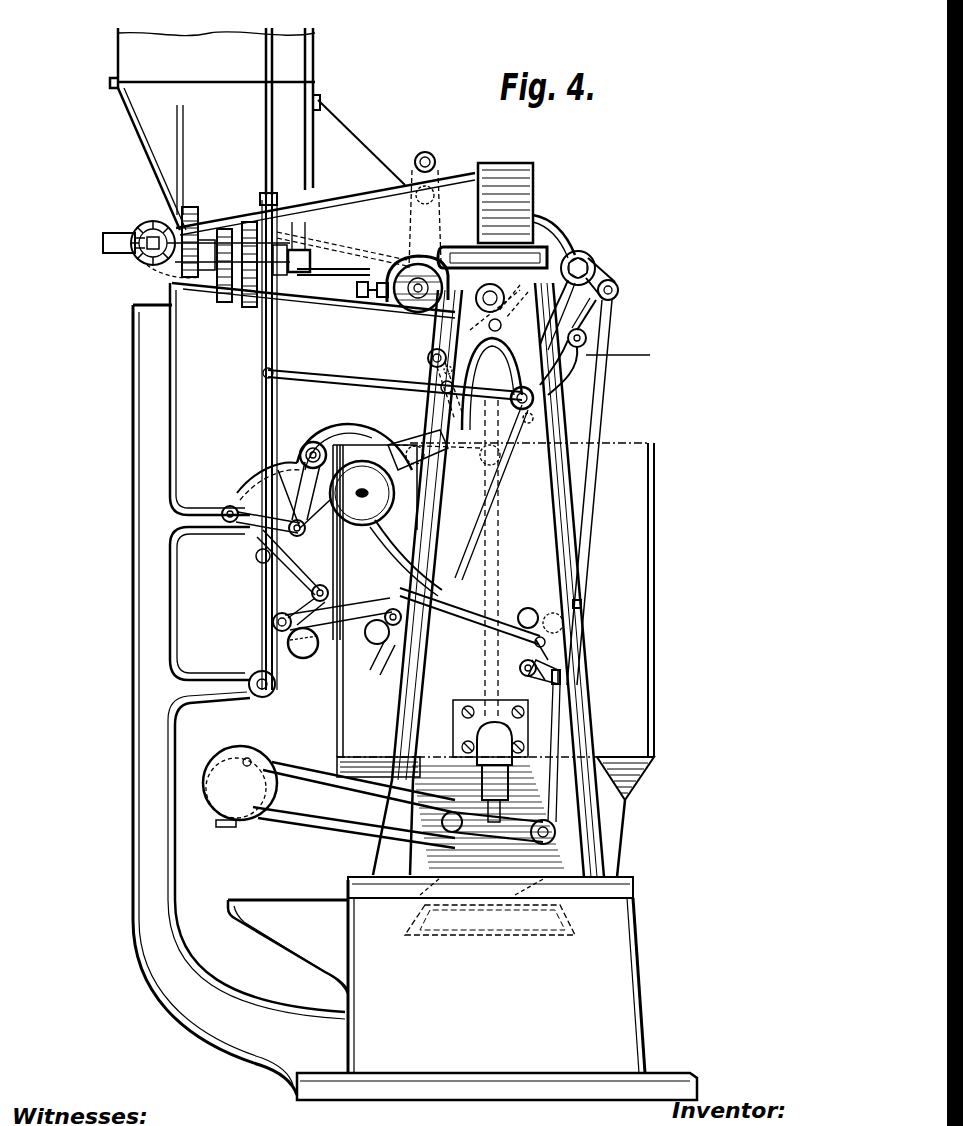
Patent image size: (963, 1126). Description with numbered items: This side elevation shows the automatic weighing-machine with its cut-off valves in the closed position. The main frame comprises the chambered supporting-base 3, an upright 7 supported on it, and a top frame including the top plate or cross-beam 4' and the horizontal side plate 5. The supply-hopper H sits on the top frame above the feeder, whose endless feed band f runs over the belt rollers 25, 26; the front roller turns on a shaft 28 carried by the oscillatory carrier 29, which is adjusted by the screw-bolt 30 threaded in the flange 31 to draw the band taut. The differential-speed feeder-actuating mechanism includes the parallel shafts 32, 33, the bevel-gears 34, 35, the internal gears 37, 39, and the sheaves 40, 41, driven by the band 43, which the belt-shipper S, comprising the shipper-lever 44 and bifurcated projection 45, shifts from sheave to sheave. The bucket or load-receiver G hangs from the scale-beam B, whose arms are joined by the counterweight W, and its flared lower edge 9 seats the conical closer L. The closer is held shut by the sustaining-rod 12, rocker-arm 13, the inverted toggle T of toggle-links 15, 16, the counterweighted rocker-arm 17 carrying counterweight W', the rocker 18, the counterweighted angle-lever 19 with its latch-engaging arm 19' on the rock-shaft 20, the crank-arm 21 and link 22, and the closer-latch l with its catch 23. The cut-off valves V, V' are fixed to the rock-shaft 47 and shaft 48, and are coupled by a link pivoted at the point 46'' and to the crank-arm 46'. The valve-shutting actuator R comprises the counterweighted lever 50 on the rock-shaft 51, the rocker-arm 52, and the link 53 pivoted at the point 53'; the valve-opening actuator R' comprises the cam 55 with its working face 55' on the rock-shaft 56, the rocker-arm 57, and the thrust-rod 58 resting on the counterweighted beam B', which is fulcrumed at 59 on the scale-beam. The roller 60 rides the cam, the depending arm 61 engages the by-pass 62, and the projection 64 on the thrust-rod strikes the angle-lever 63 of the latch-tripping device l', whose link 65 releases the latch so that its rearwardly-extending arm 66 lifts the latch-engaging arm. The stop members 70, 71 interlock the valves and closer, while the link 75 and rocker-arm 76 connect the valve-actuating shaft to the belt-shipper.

The chambered supporting-base 3 is at (462, 988).
The top plate or cross-beam 4' is at (503, 215).
The horizontal beam or side plate 5 is at (325, 204).
The upright 7 is at (133, 790).
The outwardly flared lower edge 9 is at (568, 920).
The sustaining-rod 12 is at (498, 523).
The rocker-arm 13 is at (465, 470).
The toggle-link 15 is at (298, 500).
The toggle-link 16 is at (288, 538).
The counterweighted rocker-arm 17 is at (336, 432).
The rock-shaft or rocker 18 is at (300, 538).
The counterweighted angle-lever 19 is at (273, 643).
The latch-engaging arm 19' is at (338, 602).
The rock-shaft 20 is at (273, 622).
The crank-arm 21 is at (300, 605).
The link 22 is at (268, 570).
The catch 23 is at (392, 608).
The belt roller or carrier 25 is at (145, 226).
The belt roller or carrier 26 is at (408, 302).
The shaft 28 is at (438, 245).
The oscillatory carrier 29 is at (412, 262).
The screw-bolt 30 is at (333, 264).
The flange 31 is at (375, 300).
The shaft 32 is at (103, 243).
The shaft 33 is at (312, 255).
The bevel-gear 34 is at (140, 250).
The bevel-gear 35 is at (152, 265).
The internal gear 37 is at (191, 207).
The internal gear 39 is at (224, 303).
The sheave 40 is at (247, 308).
The sheave 41 is at (262, 308).
The belt or band 43 is at (265, 142).
The shipper-lever 44 is at (258, 420).
The band-engaging device or bifurcated projection 45 is at (260, 195).
The crank-arm 46' is at (426, 386).
The pivot point 46'' is at (574, 228).
The rock-shaft 47 is at (476, 296).
The shaft 48 is at (427, 355).
The counterweighted lever 50 is at (412, 448).
The rock-shaft 51 is at (535, 400).
The rocker-arm 52 is at (492, 384).
The link 53 is at (509, 326).
The pivot point 53' is at (423, 369).
The lever-actuating cam 55 is at (557, 315).
The working face 55' is at (588, 314).
The rock-shaft 56 is at (590, 260).
The rocker-arm 57 is at (617, 283).
The thrust-rod 58 is at (600, 392).
The fulcrum 59 is at (447, 800).
The roller 60 is at (587, 338).
The pointer or depending arm 61 is at (470, 565).
The by-pass 62 is at (582, 604).
The angle-lever 63 is at (535, 648).
The projection 64 is at (560, 675).
The link 65 is at (466, 615).
The rearwardly-extending arm 66 is at (366, 635).
The stop member 70 is at (385, 548).
The stop member 71 is at (248, 490).
The link 75 is at (346, 372).
The rocker-arm 76 is at (536, 420).
The scale-beam B is at (404, 835).
The counterweighted beam B' is at (359, 777).
The bed frame F' is at (313, 306).
The bucket or load-receiver G is at (532, 621).
The supply-hopper H is at (257, 129).
The closer L is at (420, 895).
The valve-shutting actuator R is at (362, 467).
The valve-opening actuator R' is at (602, 367).
The belt-shipper S is at (258, 396).
The inverted toggle T is at (312, 439).
The cut-off plate or valve V is at (510, 307).
The cut-off plate or valve V' is at (430, 375).
The counterweight W is at (240, 802).
The counterweight W' is at (298, 445).
The endless feed band or belt f is at (342, 249).
The closer-latch l is at (382, 657).
The latch-tripping device l' is at (526, 664).